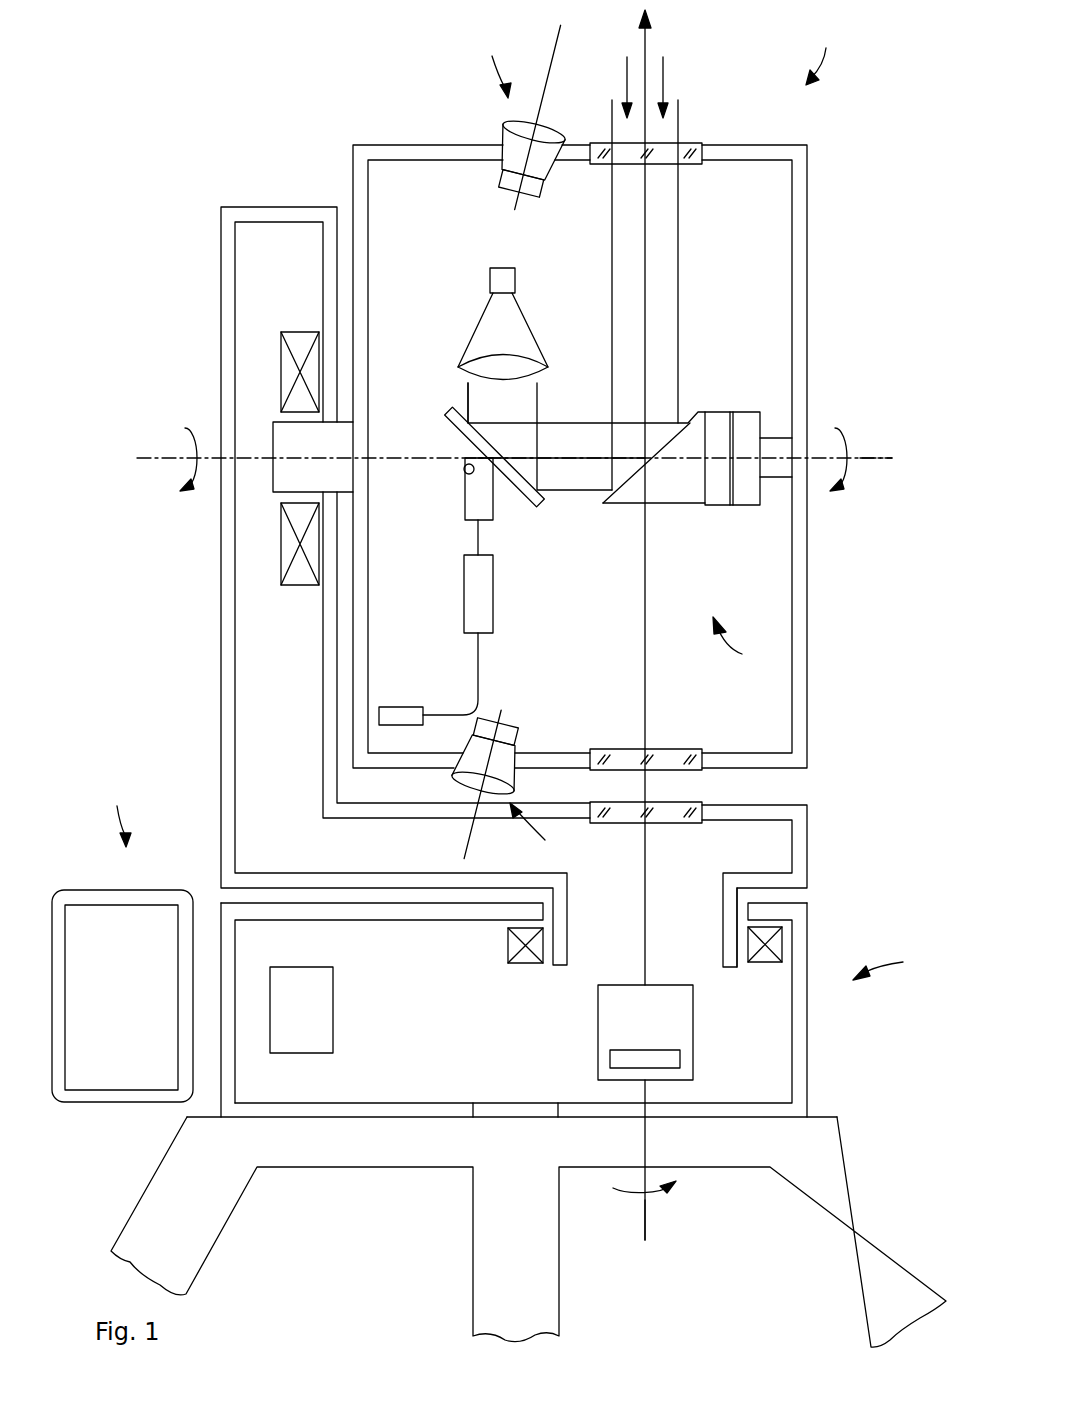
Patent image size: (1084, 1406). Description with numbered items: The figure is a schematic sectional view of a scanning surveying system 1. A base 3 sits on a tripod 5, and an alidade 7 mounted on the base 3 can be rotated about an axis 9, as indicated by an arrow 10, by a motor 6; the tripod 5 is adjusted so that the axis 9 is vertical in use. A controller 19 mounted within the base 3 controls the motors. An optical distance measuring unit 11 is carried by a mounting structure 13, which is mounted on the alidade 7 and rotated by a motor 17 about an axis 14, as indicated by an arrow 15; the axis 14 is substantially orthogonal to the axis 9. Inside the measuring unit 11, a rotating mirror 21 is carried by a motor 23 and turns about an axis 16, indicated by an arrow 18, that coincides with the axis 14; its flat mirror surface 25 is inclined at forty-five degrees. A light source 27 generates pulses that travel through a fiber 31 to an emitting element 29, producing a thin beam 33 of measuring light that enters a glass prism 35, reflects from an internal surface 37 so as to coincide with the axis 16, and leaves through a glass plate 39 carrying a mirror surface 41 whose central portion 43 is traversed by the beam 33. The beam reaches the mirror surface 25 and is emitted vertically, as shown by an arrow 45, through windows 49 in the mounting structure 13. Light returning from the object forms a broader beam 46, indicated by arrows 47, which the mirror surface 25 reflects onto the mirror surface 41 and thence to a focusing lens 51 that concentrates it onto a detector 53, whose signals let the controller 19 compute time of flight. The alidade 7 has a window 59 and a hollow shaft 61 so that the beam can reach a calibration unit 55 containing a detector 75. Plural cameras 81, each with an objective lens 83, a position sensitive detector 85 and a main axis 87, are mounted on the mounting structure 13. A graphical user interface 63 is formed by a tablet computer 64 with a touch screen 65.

The scanning surveying system 1 is at (821, 51).
The base 3 is at (808, 1023).
The tripod 5 is at (885, 1188).
The motor 6 is at (783, 945).
The alidade 7 is at (221, 676).
The axis 9 is at (648, 1232).
The arrow 10 is at (680, 1191).
The optical distance measuring unit 11 is at (737, 649).
The mounting structure 13 is at (807, 652).
The axis 14 is at (145, 452).
The arrow 15 is at (187, 428).
The axis of rotation 16 is at (878, 455).
The motor 17 is at (289, 330).
The arrow 18 is at (835, 428).
The controller 19 is at (289, 1023).
The rotating mirror 21 is at (673, 505).
The motor 23 is at (712, 411).
The mirror surface 25 is at (624, 490).
The light source 27 is at (400, 706).
The emitting element 29 is at (464, 592).
The fiber 31 is at (481, 657).
The beam of measuring light 33 is at (477, 543).
The glass prism 35 is at (465, 508).
The internal surface 37 is at (464, 472).
The glass plate 39 is at (447, 412).
The mirror surface 41 is at (462, 420).
The central portion 43 is at (505, 458).
The arrow 45 is at (655, 40).
The broader beam 46 is at (679, 300).
The arrows 47 is at (622, 70).
The windows 49 is at (672, 140).
The focusing lens 51 is at (537, 358).
The detector 53 is at (489, 283).
The calibration unit 55 is at (694, 1035).
The window 59 is at (685, 825).
The hollow shaft 61 is at (723, 915).
The graphical user interface 63 is at (117, 812).
The tablet computer 64 is at (80, 889).
The touch screen 65 is at (111, 1011).
The detector 75 is at (611, 1056).
The cameras 81 is at (492, 447).
The objective lens 83 is at (519, 130).
The position sensitive detector 85 is at (502, 179).
The main axis 87 is at (549, 75).